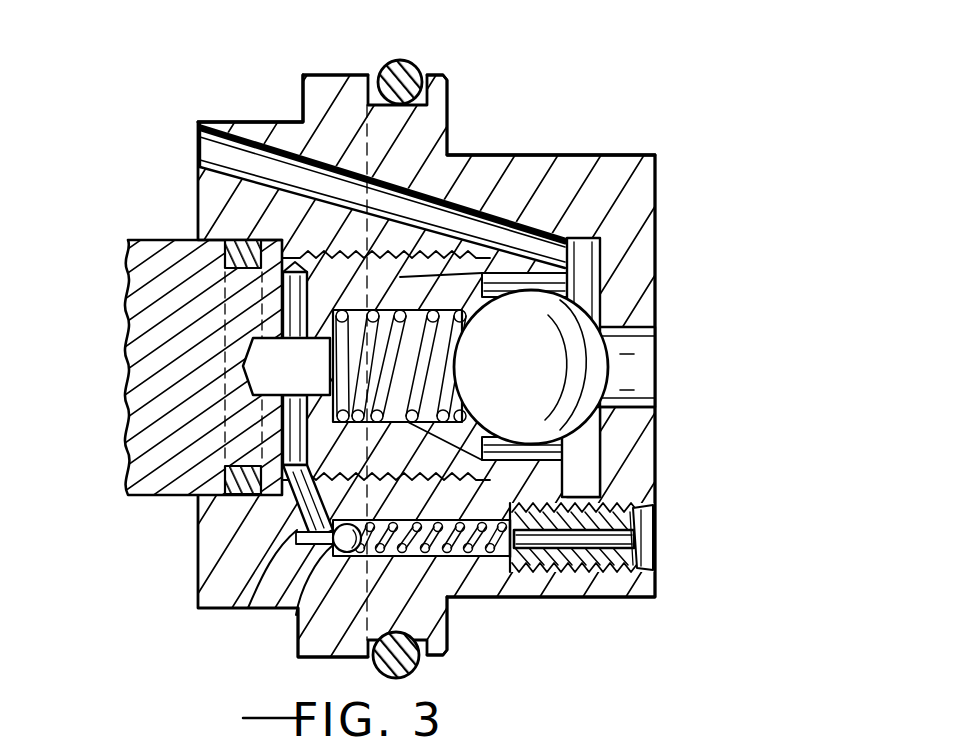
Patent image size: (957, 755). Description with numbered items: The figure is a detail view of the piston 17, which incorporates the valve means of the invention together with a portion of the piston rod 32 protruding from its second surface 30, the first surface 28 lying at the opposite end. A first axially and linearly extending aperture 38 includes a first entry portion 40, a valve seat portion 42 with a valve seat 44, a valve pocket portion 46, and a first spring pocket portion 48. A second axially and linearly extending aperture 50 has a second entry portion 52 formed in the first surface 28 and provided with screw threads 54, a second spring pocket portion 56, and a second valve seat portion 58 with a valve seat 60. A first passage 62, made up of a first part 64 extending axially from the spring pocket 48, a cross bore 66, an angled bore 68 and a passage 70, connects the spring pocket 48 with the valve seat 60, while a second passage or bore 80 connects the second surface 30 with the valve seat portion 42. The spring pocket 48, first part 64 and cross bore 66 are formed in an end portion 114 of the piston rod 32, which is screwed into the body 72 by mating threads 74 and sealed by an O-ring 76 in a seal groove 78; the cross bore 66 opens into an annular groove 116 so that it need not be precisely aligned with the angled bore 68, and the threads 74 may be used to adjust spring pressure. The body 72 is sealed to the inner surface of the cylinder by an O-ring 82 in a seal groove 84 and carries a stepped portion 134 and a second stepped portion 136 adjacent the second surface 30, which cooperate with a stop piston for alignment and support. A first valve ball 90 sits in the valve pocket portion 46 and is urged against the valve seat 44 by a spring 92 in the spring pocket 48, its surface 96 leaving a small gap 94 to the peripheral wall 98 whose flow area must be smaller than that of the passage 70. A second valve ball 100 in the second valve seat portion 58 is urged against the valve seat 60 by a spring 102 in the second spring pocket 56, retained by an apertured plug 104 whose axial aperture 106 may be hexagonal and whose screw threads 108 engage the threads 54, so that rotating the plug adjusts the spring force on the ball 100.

The piston 17 is at (535, 112).
The first surface 28 is at (660, 226).
The second surface 30 is at (200, 168).
The piston rod 32 is at (150, 240).
The axially and linearly extending aperture 38 is at (679, 370).
The first entry portion 40 is at (656, 368).
The valve seat portion 42 is at (615, 460).
The valve seat 44 is at (640, 420).
The valve pocket portion 46 is at (605, 474).
The first spring pocket portion 48 is at (442, 312).
The second axially and linearly extending aperture 50 is at (638, 579).
The second entry portion 52 is at (640, 540).
The screw threads 54 is at (652, 570).
The second spring pocket portion 56 is at (466, 572).
The second valve seat portion 58 is at (296, 615).
The valve seat 60 is at (290, 614).
The first passage 62 is at (198, 492).
The first part 64 is at (268, 362).
The cross bore 66 is at (292, 412).
The angled bore 68 is at (292, 518).
The passage 70 is at (246, 609).
The body 72 is at (336, 90).
The mating threads 74 is at (325, 282).
The O-ring 76 is at (248, 270).
The seal groove 78 is at (223, 255).
The second passage 80 is at (228, 148).
The O-ring 82 is at (418, 668).
The seal groove 84 is at (450, 648).
The first valve element 90 is at (662, 328).
The spring 92 is at (400, 312).
The small gap 94 is at (578, 300).
The surface 96 is at (490, 316).
The peripheral wall 98 is at (540, 286).
The second valve element 100 is at (344, 560).
The spring 102 is at (380, 556).
The apertured plug 104 is at (600, 570).
The axial aperture 106 is at (520, 566).
The screw threads 108 is at (628, 572).
The end portion 114 is at (352, 250).
The annular groove 116 is at (283, 276).
The stepped portion 134 is at (548, 155).
The second stepped portion 136 is at (268, 122).